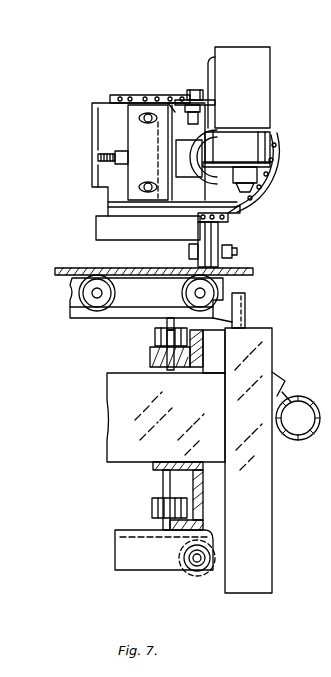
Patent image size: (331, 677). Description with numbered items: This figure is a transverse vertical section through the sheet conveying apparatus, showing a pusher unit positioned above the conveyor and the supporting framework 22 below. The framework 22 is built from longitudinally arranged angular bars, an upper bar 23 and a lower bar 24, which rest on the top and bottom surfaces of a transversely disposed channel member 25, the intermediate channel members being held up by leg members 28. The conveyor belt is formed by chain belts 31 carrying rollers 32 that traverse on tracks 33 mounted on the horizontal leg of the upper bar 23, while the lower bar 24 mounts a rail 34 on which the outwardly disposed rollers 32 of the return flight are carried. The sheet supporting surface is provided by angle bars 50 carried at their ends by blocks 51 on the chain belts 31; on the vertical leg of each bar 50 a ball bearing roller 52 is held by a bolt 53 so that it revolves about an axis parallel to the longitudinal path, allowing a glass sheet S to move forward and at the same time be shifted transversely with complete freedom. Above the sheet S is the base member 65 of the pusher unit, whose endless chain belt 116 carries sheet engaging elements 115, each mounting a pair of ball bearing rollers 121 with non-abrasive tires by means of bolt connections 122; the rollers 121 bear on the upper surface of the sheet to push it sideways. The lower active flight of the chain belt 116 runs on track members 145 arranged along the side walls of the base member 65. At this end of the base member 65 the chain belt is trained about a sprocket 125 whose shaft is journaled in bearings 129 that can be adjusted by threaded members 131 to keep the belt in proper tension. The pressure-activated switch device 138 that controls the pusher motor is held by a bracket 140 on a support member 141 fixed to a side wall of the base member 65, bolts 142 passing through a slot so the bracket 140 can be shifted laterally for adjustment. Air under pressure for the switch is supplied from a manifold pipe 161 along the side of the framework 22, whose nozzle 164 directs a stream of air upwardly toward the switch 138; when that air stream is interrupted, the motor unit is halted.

The framework 22 is at (120, 415).
The upper bars 23 is at (191, 368).
The lower bars 24 is at (186, 462).
The channel members 25 is at (127, 441).
The leg members 28 is at (250, 556).
The chain belts 31 is at (168, 368).
The rollers 32 is at (154, 334).
The tracks 33 is at (150, 355).
The rails or tracks 34 is at (204, 524).
The angle bars 50 is at (80, 314).
The blocks 51 is at (170, 319).
The rollers 52 is at (99, 284).
The bolts 53 is at (103, 295).
The base member 65 is at (102, 134).
The sheet engaging elements 115 is at (236, 242).
The endless chain belt 116 is at (120, 90).
The ball bearing rollers 121 is at (196, 252).
The bolt connections 122 is at (236, 252).
The sprocket 125 is at (256, 173).
The bearings 129 is at (258, 196).
The threaded members 131 is at (97, 158).
The pressure-activated switch device 138 is at (243, 151).
The bracket 140 is at (209, 63).
The support member 141 is at (170, 101).
The bolts 142 is at (196, 92).
The track members 145 is at (110, 232).
The manifold pipe 161 is at (298, 441).
The jet pipes or nozzles 164 is at (240, 309).
The sheet S is at (253, 272).